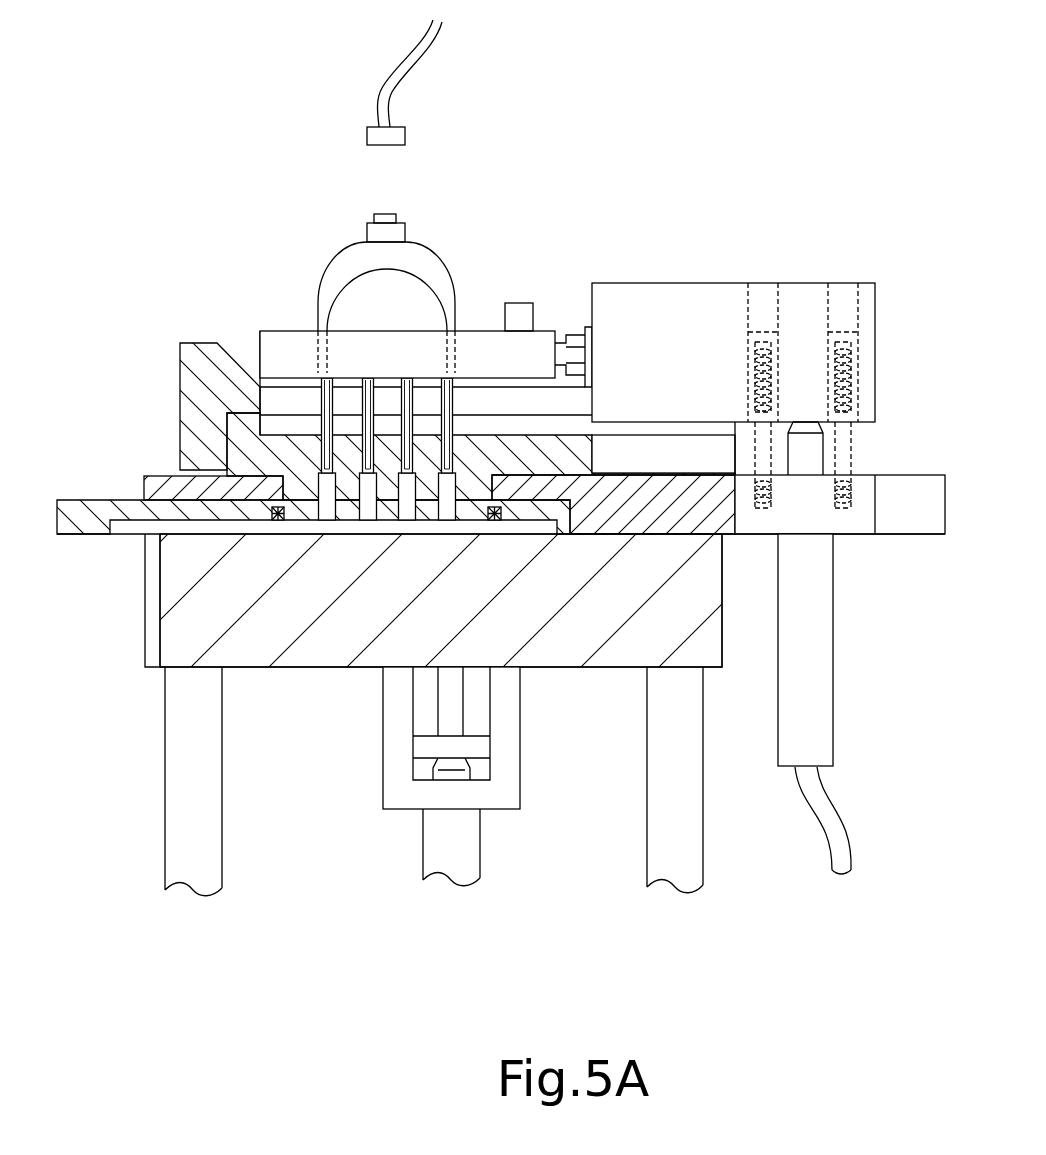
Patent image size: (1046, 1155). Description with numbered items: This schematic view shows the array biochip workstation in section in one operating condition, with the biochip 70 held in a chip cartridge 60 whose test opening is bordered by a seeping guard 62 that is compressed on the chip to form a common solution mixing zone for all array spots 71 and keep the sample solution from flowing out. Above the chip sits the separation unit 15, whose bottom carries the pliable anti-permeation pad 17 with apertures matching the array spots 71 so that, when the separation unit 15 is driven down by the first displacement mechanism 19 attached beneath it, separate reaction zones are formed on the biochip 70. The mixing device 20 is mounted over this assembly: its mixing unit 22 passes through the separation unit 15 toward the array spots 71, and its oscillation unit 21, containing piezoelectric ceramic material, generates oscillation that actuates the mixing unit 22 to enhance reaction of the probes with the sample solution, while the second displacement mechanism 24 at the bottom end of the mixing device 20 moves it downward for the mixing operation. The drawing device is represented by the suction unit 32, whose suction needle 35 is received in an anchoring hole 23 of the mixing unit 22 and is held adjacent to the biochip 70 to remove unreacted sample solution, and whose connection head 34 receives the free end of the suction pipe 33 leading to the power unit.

The separation unit 15 is at (176, 397).
The anti-permeation pad 17 is at (353, 521).
The first displacement mechanism 19 is at (463, 858).
The mixing device 20 is at (885, 310).
The oscillation unit 21 is at (672, 283).
The mixing unit 22 is at (298, 347).
The anchoring hole 23 is at (459, 339).
The second displacement mechanism 24 is at (802, 655).
The suction unit 32 is at (371, 254).
The suction pipe 33 is at (425, 63).
The connection head 34 is at (400, 146).
The suction needle 35 is at (344, 343).
The chip cartridge 60 is at (118, 498).
The seeping guard 62 is at (282, 521).
The biochip 70 is at (157, 520).
The array spots 71 is at (330, 521).